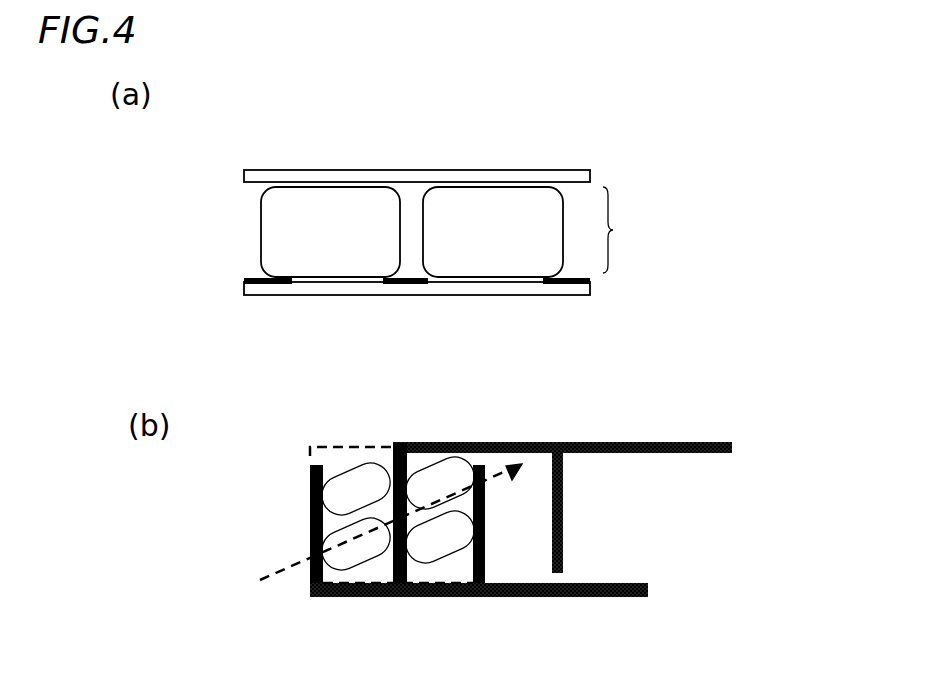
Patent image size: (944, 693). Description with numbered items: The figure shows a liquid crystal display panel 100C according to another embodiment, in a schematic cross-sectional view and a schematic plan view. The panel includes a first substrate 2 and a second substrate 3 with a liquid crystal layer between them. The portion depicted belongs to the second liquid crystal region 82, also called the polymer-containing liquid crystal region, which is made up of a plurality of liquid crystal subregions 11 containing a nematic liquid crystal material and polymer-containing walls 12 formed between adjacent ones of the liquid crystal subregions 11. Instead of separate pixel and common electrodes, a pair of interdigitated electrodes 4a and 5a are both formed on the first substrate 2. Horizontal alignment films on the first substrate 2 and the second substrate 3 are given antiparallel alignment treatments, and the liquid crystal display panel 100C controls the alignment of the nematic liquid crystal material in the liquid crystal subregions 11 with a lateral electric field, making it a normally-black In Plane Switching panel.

The first substrate 2 is at (590, 290).
The second substrate 3 is at (590, 177).
The interdigitated electrode 4a is at (247, 283).
The interdigitated electrode 5a is at (403, 283).
The liquid crystal subregion 11 is at (493, 258).
The polymer-containing wall 12 is at (412, 237).
The second liquid crystal region 82 is at (629, 230).
The liquid crystal display panel 100C is at (780, 160).